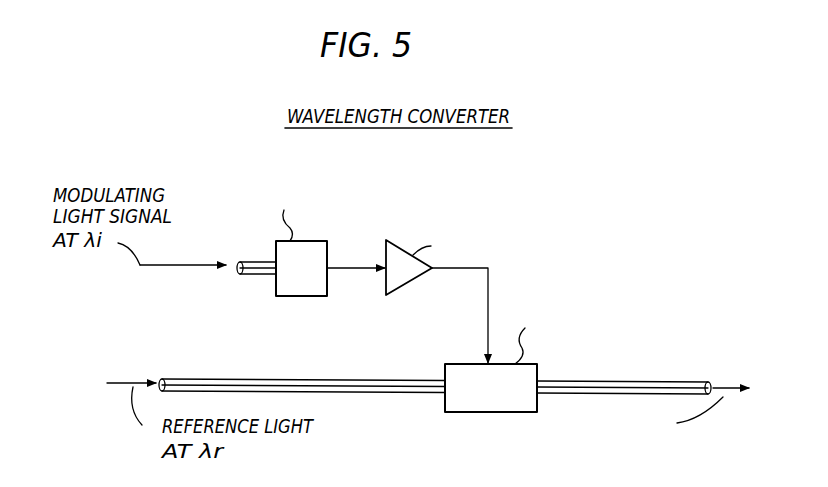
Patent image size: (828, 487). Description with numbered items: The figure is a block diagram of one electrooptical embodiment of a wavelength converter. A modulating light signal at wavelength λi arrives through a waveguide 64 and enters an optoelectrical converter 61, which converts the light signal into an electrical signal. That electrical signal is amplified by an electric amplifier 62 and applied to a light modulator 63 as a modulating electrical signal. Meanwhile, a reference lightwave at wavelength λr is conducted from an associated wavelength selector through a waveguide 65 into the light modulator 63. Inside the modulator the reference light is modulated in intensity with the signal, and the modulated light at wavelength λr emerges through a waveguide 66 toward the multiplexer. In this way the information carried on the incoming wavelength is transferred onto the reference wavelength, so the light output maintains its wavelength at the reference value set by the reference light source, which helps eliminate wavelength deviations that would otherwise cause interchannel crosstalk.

The optoelectrical converter 61 is at (330, 254).
The electric amplifier 62 is at (412, 281).
The light modulator 63 is at (485, 414).
The waveguide 64 is at (260, 261).
The waveguide 65 is at (380, 395).
The waveguide 66 is at (625, 380).